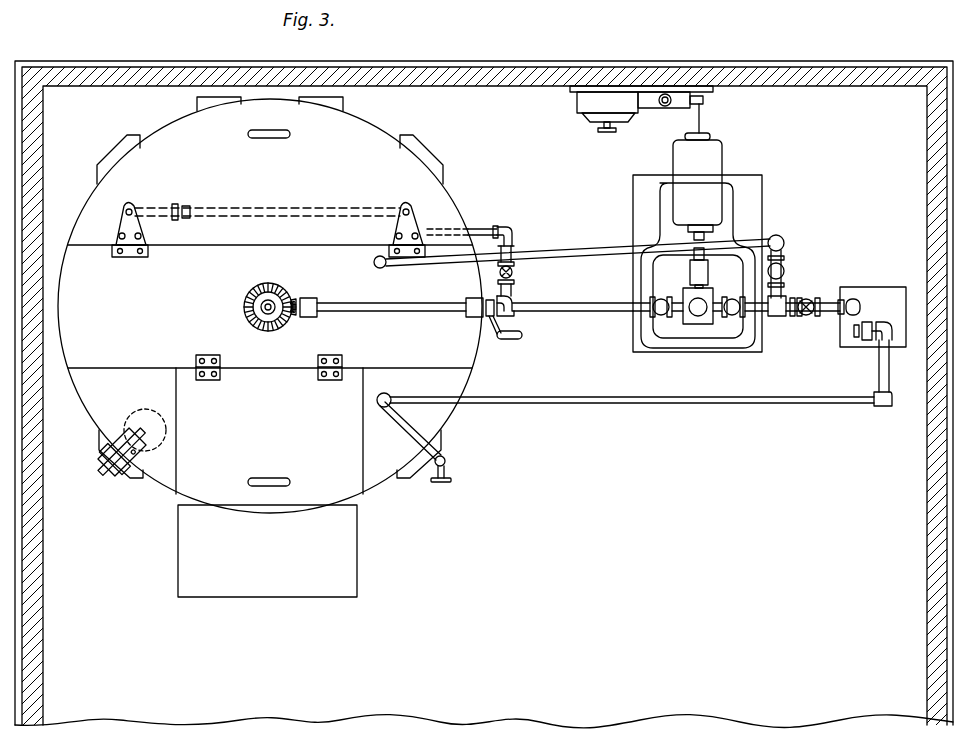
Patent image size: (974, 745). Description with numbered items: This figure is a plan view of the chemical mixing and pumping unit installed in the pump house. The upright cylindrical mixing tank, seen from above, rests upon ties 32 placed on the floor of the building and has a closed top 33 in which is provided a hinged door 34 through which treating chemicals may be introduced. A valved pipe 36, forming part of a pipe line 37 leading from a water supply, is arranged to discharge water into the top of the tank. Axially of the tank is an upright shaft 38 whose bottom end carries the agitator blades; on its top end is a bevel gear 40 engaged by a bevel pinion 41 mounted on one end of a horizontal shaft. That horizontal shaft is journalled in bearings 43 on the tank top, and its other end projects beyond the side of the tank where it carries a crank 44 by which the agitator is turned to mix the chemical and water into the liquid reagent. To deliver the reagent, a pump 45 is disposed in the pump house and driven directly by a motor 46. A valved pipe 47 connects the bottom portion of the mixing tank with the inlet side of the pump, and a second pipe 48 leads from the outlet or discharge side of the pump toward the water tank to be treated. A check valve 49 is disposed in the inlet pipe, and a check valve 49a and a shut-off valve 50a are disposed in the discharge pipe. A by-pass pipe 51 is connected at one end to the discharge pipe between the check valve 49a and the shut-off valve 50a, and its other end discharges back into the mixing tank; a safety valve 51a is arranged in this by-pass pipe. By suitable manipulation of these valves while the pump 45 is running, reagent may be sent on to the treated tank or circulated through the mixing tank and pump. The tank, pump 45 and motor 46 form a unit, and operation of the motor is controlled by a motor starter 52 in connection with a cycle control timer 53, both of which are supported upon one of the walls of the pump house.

The ties 32 is at (416, 130).
The closed top 33 is at (142, 307).
The hinged door 34 is at (234, 425).
The valved pipe 36 is at (388, 394).
The pipe line 37 is at (879, 362).
The upright shaft 38 is at (256, 297).
The bevel gear 40 is at (273, 292).
The bevel pinion 41 is at (296, 300).
The bearings 43 is at (308, 312).
The crank 44 is at (503, 324).
The pump 45 is at (662, 338).
The motor 46 is at (673, 151).
The valved pipe 47 is at (513, 285).
The second pipe 48 is at (830, 300).
The check valve 49 is at (672, 286).
The check valve 49a is at (734, 299).
The shut-off valve 50a is at (806, 298).
The by-pass pipe 51 is at (608, 252).
The safety valve 51a is at (784, 264).
The motor starter 52 is at (710, 101).
The cycle control timer 53 is at (580, 108).